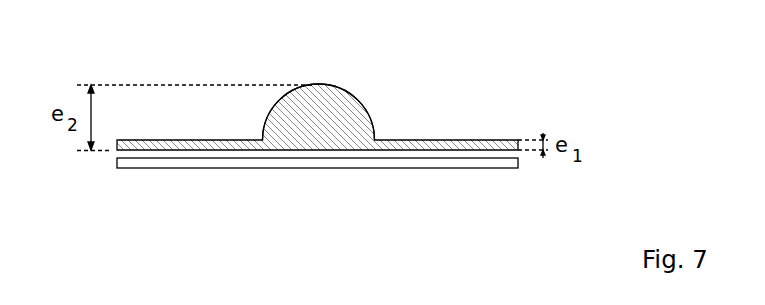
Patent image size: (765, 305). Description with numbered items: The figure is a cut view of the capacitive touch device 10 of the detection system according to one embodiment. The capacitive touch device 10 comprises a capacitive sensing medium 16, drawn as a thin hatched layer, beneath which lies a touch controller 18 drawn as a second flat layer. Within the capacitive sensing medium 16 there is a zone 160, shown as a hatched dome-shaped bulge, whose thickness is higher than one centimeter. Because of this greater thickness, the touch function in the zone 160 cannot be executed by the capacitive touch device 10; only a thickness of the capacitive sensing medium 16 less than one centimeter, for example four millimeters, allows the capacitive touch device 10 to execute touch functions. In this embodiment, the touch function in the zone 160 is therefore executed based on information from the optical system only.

The capacitive touch device 10 is at (538, 101).
The capacitive sensing medium 16 is at (467, 140).
The zone of thickness e2 160 is at (332, 97).
The touch controller 18 is at (473, 165).